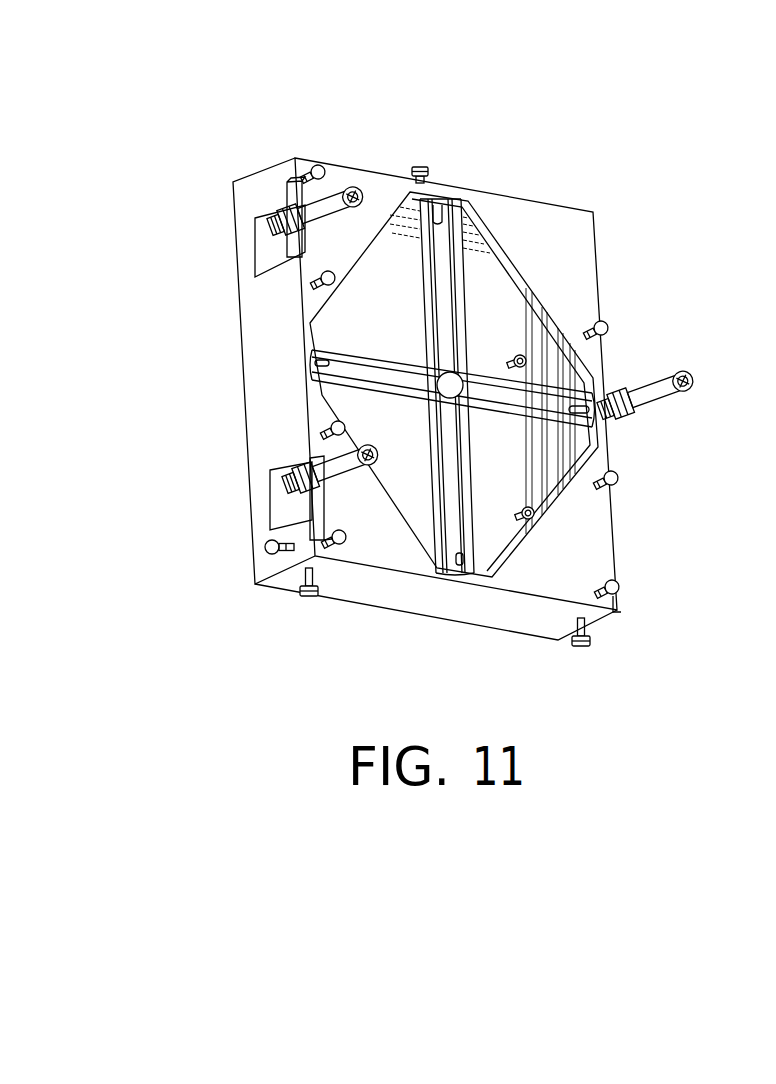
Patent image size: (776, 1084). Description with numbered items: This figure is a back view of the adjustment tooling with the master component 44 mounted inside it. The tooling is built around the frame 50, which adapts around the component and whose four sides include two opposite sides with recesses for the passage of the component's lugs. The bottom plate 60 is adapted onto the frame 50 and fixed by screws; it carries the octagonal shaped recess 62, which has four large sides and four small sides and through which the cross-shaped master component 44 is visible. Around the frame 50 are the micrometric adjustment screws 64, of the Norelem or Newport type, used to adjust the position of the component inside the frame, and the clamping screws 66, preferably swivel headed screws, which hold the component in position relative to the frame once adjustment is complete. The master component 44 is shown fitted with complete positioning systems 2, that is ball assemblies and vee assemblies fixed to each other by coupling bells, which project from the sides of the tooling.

The connector 2 is at (339, 180).
The master component 44 is at (332, 334).
The frame 50 is at (228, 315).
The bottom plate 60 is at (611, 224).
The octagonal shaped recess 62 is at (505, 258).
The micrometric adjustment screws 64 is at (422, 166).
The clamping screws 66 is at (312, 287).